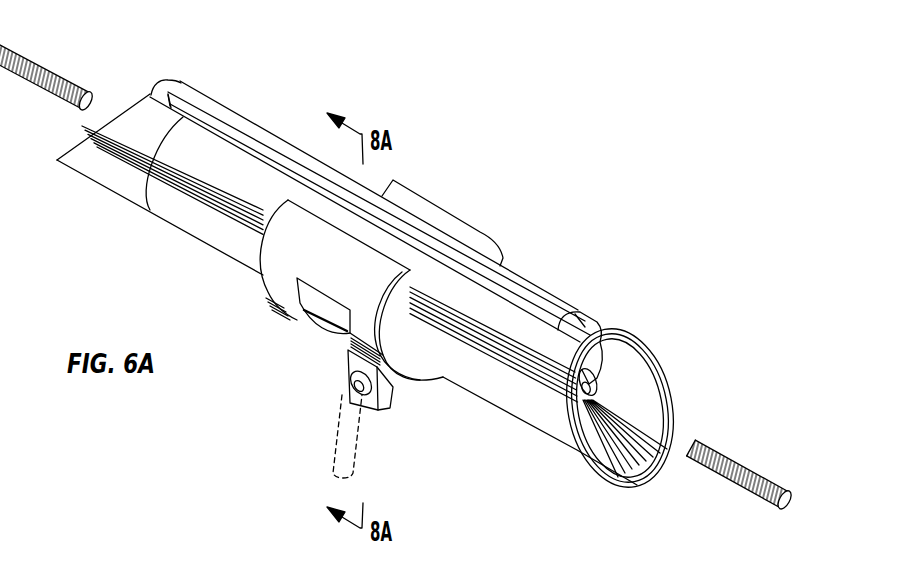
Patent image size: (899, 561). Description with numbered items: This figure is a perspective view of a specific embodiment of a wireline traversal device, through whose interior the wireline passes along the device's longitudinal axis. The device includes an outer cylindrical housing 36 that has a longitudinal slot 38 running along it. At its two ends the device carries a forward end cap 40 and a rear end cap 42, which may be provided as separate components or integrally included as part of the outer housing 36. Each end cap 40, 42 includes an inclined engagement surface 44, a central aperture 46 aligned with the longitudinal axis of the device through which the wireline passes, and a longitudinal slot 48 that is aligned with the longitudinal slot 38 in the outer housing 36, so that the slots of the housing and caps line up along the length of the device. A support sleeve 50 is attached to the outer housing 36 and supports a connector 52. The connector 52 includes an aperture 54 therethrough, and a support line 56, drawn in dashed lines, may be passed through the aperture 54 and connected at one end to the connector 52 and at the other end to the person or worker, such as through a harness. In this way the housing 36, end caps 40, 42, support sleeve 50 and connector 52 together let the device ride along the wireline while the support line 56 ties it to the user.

The outer cylindrical housing 36 is at (545, 292).
The longitudinal slot 38 is at (262, 157).
The forward end cap 40 is at (552, 433).
The rear end cap 42 is at (193, 97).
The inclined engagement surface 44 is at (652, 360).
The central aperture 46 is at (623, 338).
The longitudinal slot 48 is at (160, 93).
The support sleeve 50 is at (277, 307).
The connector 52 is at (348, 360).
The aperture 54 is at (360, 391).
The support line 56 is at (335, 433).